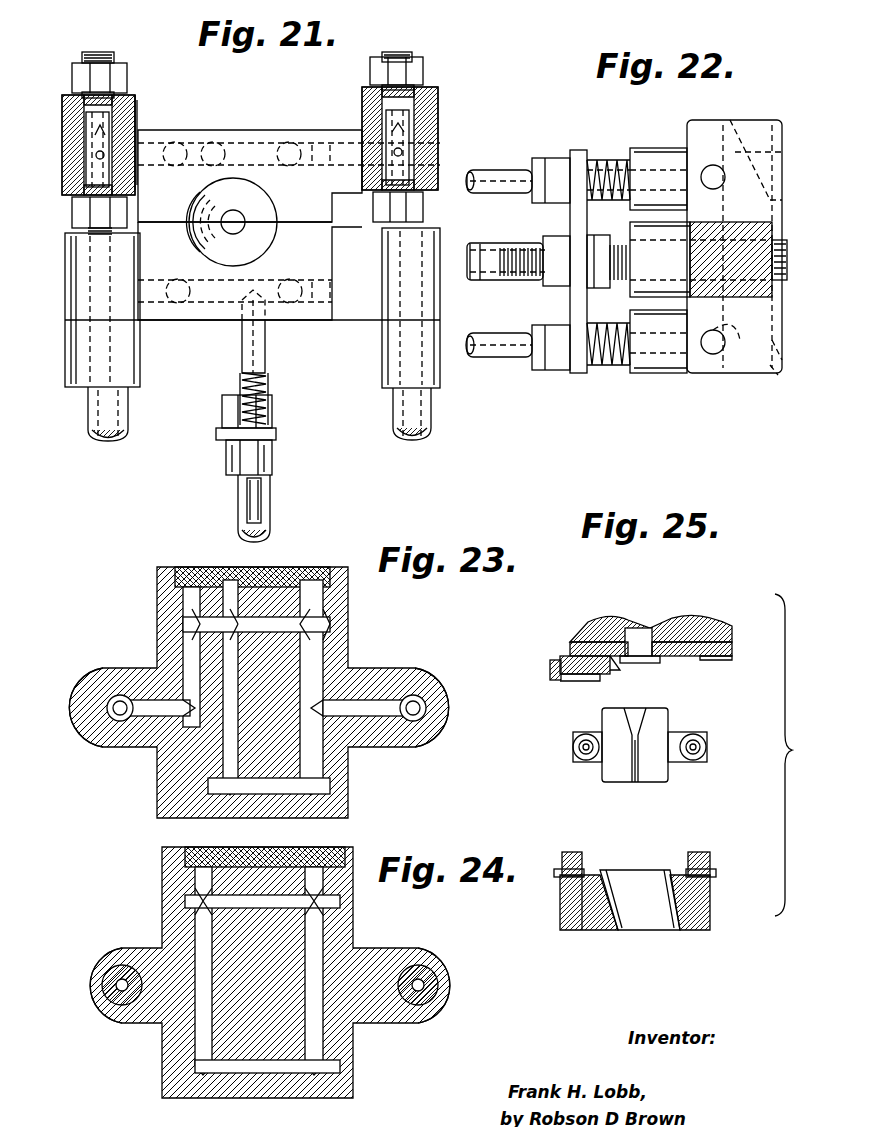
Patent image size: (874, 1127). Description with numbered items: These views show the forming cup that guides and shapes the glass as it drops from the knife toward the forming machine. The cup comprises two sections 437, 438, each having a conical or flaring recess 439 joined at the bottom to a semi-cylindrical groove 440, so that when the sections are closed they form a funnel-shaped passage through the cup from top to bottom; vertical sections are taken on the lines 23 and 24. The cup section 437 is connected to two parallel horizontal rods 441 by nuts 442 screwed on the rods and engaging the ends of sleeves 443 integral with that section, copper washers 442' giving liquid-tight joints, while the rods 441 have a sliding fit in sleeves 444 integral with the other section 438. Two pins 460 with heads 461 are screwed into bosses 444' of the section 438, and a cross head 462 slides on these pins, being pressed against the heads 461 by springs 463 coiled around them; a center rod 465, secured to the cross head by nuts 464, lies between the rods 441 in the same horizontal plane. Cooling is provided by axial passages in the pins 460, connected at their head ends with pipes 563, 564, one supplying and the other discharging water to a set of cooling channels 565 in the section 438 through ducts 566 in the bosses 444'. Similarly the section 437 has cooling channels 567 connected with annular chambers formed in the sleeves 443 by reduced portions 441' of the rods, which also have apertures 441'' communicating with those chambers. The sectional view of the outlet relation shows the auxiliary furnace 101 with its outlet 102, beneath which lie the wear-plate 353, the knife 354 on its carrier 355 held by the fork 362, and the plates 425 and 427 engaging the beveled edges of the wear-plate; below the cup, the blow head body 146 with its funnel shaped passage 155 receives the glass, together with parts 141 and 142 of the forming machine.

In FIG. 21, the cup section 437 is at (205, 133).
In FIG. 23, the cup section 437 is at (160, 605).
In FIG. 25, the cup section 437 is at (658, 718).
In FIG. 21, the cup section 438 is at (188, 312).
In FIG. 22, the cup section 438 is at (765, 130).
In FIG. 24, the cup section 438 is at (165, 873).
In FIG. 21, the conical recess 439 is at (265, 243).
In FIG. 22, the conical recess 439 is at (745, 130).
In FIG. 25, the conical recess 439 is at (632, 712).
In FIG. 21, the semi-cylindrical groove 440 is at (240, 218).
In FIG. 22, the semi-cylindrical groove 440 is at (770, 380).
In FIG. 25, the semi-cylindrical groove 440 is at (636, 778).
In FIG. 21, the rods 441 is at (246, 231).
In FIG. 22, the rods 441 is at (644, 256).
In FIG. 24, the rods 441 is at (278, 965).
In FIG. 21, the reduced portions 441' is at (247, 135).
In FIG. 23, the reduced portions 441' is at (259, 679).
In FIG. 21, the apertures 441'' is at (249, 118).
In FIG. 23, the apertures 441'' is at (299, 680).
In FIG. 21, the nuts 442 is at (260, 146).
In FIG. 21, the copper washers 442' is at (260, 136).
In FIG. 21, the sleeves 443 is at (66, 110).
In FIG. 23, the sleeves 443 is at (118, 740).
In FIG. 25, the sleeves 443 is at (705, 747).
In FIG. 21, the sleeves 444 is at (255, 311).
In FIG. 22, the sleeves 444 is at (708, 259).
In FIG. 24, the sleeves 444 is at (272, 1005).
In FIG. 21, the bosses 444' is at (217, 331).
In FIG. 22, the bosses 444' is at (661, 266).
In FIG. 21, the pins 460 is at (270, 389).
In FIG. 22, the pins 460 is at (598, 172).
In FIG. 21, the heads 461 is at (272, 452).
In FIG. 22, the heads 461 is at (548, 160).
In FIG. 21, the cross head 462 is at (216, 438).
In FIG. 22, the cross head 462 is at (578, 150).
In FIG. 21, the springs 463 is at (265, 405).
In FIG. 22, the springs 463 is at (602, 195).
In FIG. 21, the nuts 464 is at (225, 402).
In FIG. 22, the nuts 464 is at (555, 243).
In FIG. 21, the rod 465 is at (262, 536).
In FIG. 22, the rod 465 is at (480, 262).
In FIG. 21, the pipe 563 is at (258, 505).
In FIG. 22, the pipe 563 is at (495, 180).
In FIG. 22, the pipe 564 is at (517, 345).
In FIG. 21, the cooling channels 565 is at (300, 298).
In FIG. 22, the cooling channels 565 is at (728, 340).
In FIG. 24, the cooling channels 565 is at (318, 945).
In FIG. 21, the ducts 566 is at (262, 340).
In FIG. 22, the ducts 566 is at (672, 172).
In FIG. 21, the cooling channels 567 is at (258, 165).
In FIG. 23, the cooling channels 567 is at (310, 665).
In FIG. 21, the section line 23— 23 is at (56, 146).
In FIG. 21, the section line 24— 24 is at (56, 286).
In FIG. 25, the auxiliary furnace 101 is at (720, 632).
In FIG. 25, the outlet 102 is at (640, 640).
In FIG. 25, the plate 425 is at (718, 660).
In FIG. 25, the adjustable plate 427 is at (568, 650).
In FIG. 25, the wear-plate 353 is at (645, 660).
In FIG. 25, the knife 354 is at (615, 666).
In FIG. 25, the carrier 355 is at (580, 681).
In FIG. 25, the fork 362 is at (550, 672).
In FIG. 25, the side member 141 is at (558, 892).
In FIG. 25, the flange 142 is at (578, 852).
In FIG. 25, the blow head body 146 is at (598, 925).
In FIG. 25, the funnel shaped passage 155 is at (640, 900).